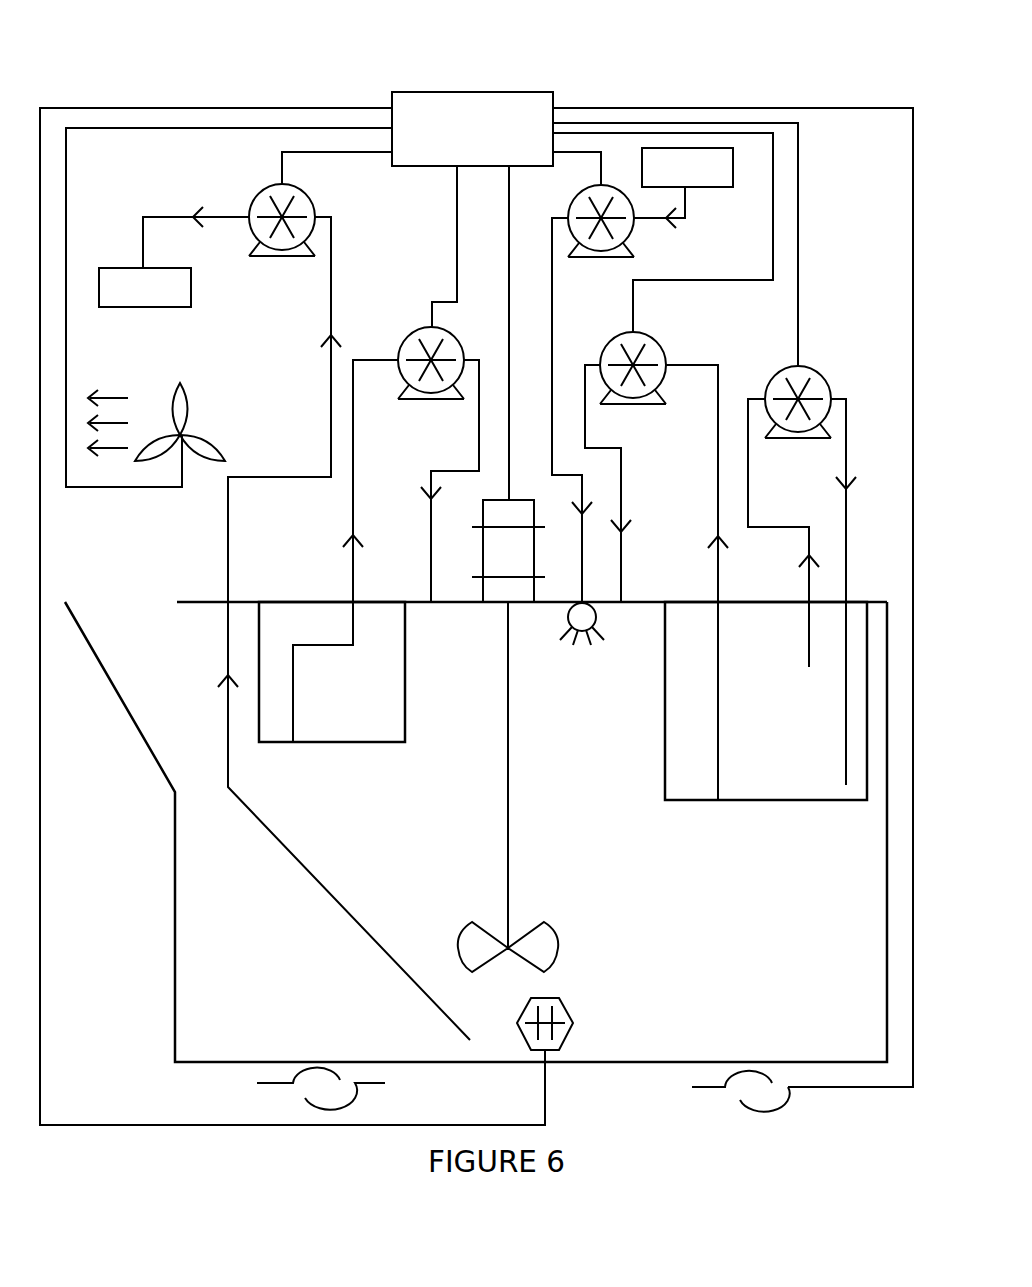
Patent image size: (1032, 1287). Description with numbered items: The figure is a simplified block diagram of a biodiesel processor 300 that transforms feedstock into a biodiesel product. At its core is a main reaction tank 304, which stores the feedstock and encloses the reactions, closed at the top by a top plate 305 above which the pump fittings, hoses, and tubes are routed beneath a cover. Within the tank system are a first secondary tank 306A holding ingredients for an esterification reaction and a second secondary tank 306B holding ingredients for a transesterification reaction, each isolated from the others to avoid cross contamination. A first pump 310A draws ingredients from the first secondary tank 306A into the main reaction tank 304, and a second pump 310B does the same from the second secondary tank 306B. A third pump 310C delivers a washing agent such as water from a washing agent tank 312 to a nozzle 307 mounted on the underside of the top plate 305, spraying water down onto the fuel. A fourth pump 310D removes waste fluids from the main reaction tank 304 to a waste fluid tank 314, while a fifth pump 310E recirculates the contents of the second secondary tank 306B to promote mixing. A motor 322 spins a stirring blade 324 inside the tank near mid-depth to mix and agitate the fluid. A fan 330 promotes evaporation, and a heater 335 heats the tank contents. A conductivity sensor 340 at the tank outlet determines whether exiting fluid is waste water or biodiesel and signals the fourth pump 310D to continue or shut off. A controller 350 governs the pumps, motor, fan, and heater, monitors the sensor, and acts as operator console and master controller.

The biodiesel processor 300 is at (215, 84).
The controller 350 is at (472, 129).
The washing agent tank 312 is at (687, 167).
The waste fluid tank 314 is at (145, 287).
The first pump 310A is at (431, 378).
The second pump 310B is at (633, 384).
The third pump 310C is at (601, 235).
The fourth pump 310D is at (282, 236).
The fifth pump 310E is at (798, 417).
The fan 330 is at (188, 433).
The top plate 305 is at (200, 600).
The main reaction tank 304 is at (476, 832).
The first secondary tank 306A is at (332, 672).
The second secondary tank 306B is at (766, 701).
The motor 322 is at (508, 551).
The nozzle 307 is at (581, 640).
The stirring blade 324 is at (535, 923).
The conductivity sensor 340 is at (565, 1000).
The heater 335 is at (770, 1102).